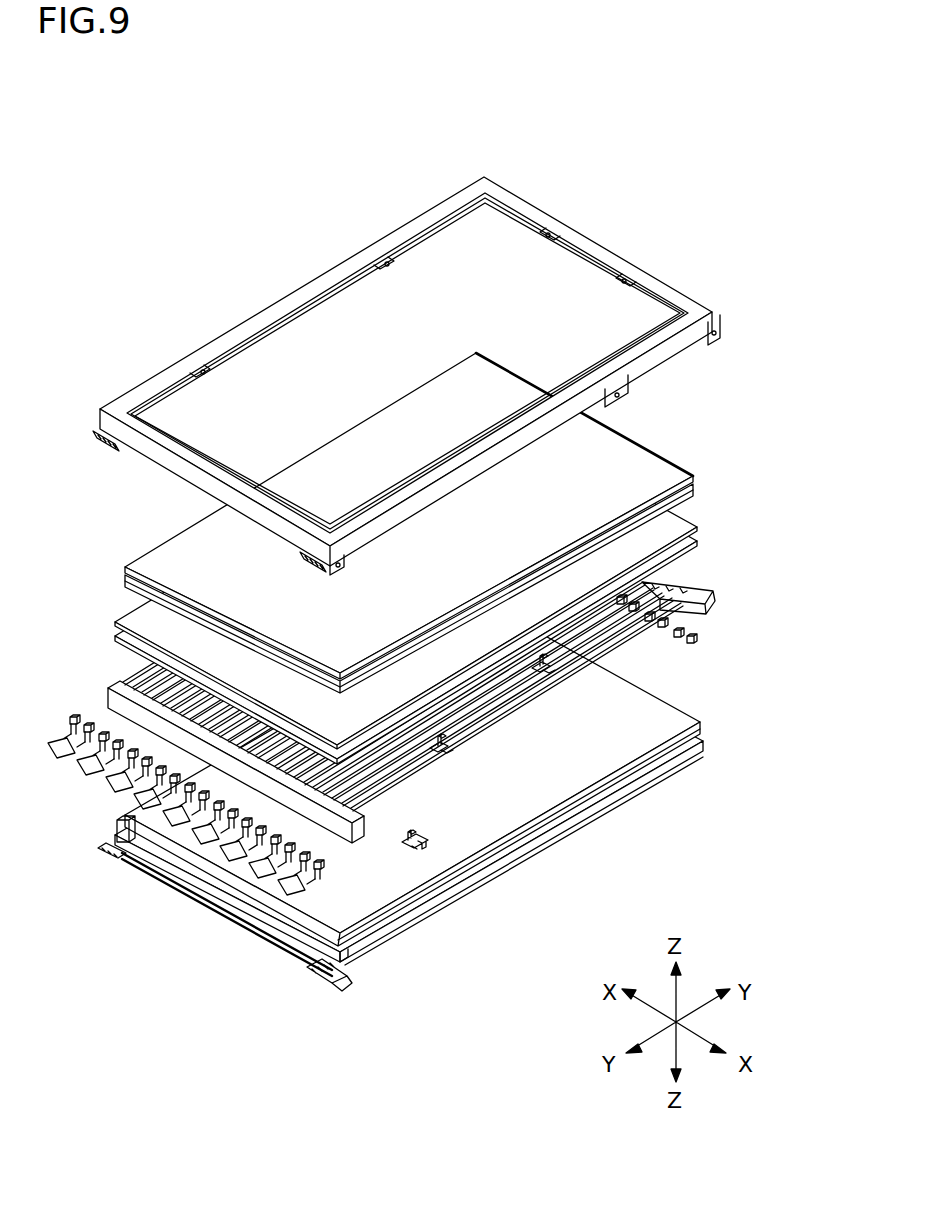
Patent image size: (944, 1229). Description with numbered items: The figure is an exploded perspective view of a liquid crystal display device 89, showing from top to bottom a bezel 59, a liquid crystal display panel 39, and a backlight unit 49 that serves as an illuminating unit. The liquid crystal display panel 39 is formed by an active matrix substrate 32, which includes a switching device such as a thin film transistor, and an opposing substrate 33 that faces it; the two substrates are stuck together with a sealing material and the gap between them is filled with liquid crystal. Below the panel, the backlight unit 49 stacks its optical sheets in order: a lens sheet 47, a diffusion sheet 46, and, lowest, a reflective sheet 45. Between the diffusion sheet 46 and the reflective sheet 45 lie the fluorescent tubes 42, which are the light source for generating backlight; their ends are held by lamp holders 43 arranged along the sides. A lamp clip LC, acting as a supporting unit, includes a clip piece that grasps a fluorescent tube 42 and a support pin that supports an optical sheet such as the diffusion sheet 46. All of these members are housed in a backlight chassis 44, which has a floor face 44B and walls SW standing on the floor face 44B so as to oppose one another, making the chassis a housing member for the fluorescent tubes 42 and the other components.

The liquid crystal display device 89 is at (197, 266).
The bezel 59 is at (714, 306).
The active matrix substrate 32 is at (658, 468).
The opposing substrate 33 is at (680, 498).
The liquid crystal display panel 39 is at (454, 523).
The lens sheet 47 is at (426, 576).
The diffusion sheet 46 is at (688, 547).
The lamp holders 43 is at (108, 690).
The fluorescent tube 42 is at (660, 678).
The reflective sheet 45 is at (701, 724).
The backlight chassis 44 is at (680, 778).
The floor face 44B is at (255, 910).
The backlight unit 49 is at (415, 727).
The walls SW is at (120, 818).
The lamp clip LC is at (432, 822).